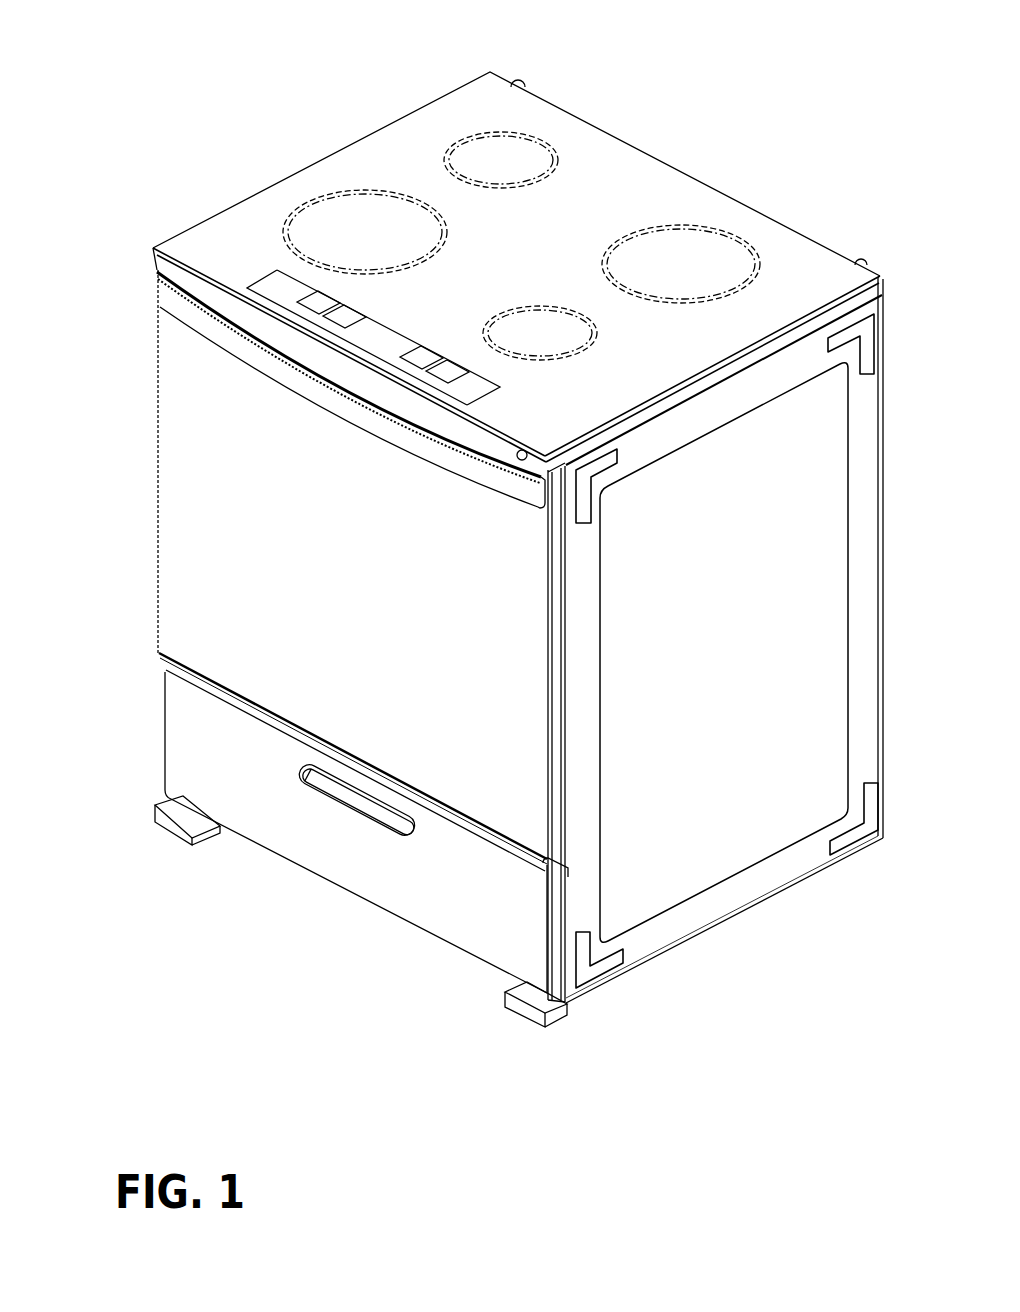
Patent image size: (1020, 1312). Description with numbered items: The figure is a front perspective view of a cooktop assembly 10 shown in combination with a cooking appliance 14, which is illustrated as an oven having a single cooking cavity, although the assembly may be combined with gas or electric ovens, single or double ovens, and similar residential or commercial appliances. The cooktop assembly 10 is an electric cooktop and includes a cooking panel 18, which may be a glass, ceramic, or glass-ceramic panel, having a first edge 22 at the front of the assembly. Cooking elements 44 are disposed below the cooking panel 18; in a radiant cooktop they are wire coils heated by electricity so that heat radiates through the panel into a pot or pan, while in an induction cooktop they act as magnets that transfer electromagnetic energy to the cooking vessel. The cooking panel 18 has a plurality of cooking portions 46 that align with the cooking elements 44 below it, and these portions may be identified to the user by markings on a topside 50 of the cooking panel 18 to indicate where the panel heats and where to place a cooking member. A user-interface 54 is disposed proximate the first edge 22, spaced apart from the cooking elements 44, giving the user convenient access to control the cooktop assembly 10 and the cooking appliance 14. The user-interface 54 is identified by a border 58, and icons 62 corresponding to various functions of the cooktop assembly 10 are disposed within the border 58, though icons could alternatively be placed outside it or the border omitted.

The cooktop assembly 10 is at (627, 98).
The cooking appliance 14 is at (160, 520).
The cooking panel 18 is at (290, 187).
The first edge 22 is at (157, 268).
The cooking elements 44 is at (760, 260).
The cooking portions 46 is at (682, 225).
The topside 50 is at (363, 137).
The user-interface 54 is at (250, 282).
The border 58 is at (270, 272).
The icons 62 is at (298, 308).